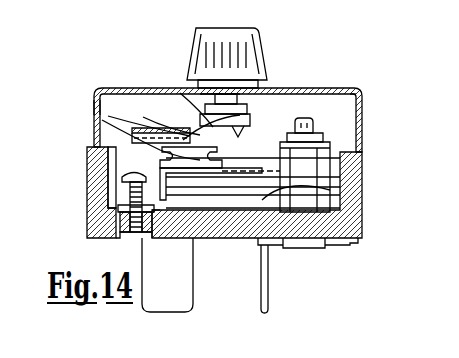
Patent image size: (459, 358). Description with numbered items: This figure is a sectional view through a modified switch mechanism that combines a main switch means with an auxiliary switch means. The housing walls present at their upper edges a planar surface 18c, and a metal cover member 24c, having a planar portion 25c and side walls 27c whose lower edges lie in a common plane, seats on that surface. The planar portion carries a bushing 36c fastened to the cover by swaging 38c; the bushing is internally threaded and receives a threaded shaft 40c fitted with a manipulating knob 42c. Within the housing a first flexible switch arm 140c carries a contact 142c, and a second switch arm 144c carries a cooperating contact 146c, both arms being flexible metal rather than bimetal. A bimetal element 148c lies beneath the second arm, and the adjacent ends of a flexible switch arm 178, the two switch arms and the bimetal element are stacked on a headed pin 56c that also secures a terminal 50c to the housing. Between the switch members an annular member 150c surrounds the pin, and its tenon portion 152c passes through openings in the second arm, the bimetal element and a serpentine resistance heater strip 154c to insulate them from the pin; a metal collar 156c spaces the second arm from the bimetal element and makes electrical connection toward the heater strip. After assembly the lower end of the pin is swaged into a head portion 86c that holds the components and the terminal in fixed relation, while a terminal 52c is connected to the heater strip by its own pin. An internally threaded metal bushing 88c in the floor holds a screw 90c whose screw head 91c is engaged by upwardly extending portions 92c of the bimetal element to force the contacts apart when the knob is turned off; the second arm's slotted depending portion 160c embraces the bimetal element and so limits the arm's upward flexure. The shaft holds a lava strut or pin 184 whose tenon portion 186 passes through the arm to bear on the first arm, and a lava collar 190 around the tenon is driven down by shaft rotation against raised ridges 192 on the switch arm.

The manipulating knob 42c is at (190, 12).
The bushing 36c is at (240, 100).
The threaded shaft 40c is at (252, 84).
The swaging 38c is at (268, 100).
The raised ridges 192 is at (238, 140).
The first flexible switch arm 140c is at (316, 127).
The headed pin 56c is at (357, 96).
The cover side walls 27c is at (97, 100).
The planar portion 25c is at (96, 84).
The metal cover member 24c is at (133, 100).
The annular member 150c is at (322, 140).
The planar surface 18c is at (335, 152).
The second switch arm 144c is at (340, 160).
The tenon portion 152c is at (345, 172).
The metal collar 156c is at (335, 188).
The bimetal element 148c is at (352, 200).
The contact 146c is at (162, 160).
The depending portion 160c is at (158, 170).
The contact 142c is at (170, 157).
The flexible switch arm 178 is at (151, 127).
The strut or pin 184 is at (213, 127).
The collar or annular member 190 is at (208, 125).
The tenon portion 186 is at (183, 88).
The internally threaded metal bushing 88c is at (113, 220).
The screw 90c is at (128, 205).
The screw head 91c is at (125, 176).
The upwardly extending portions 92c is at (130, 190).
The terminal 52c is at (140, 246).
The resistance heater strip 154c is at (176, 207).
The terminal 50c is at (261, 280).
The head portion 86c is at (310, 250).